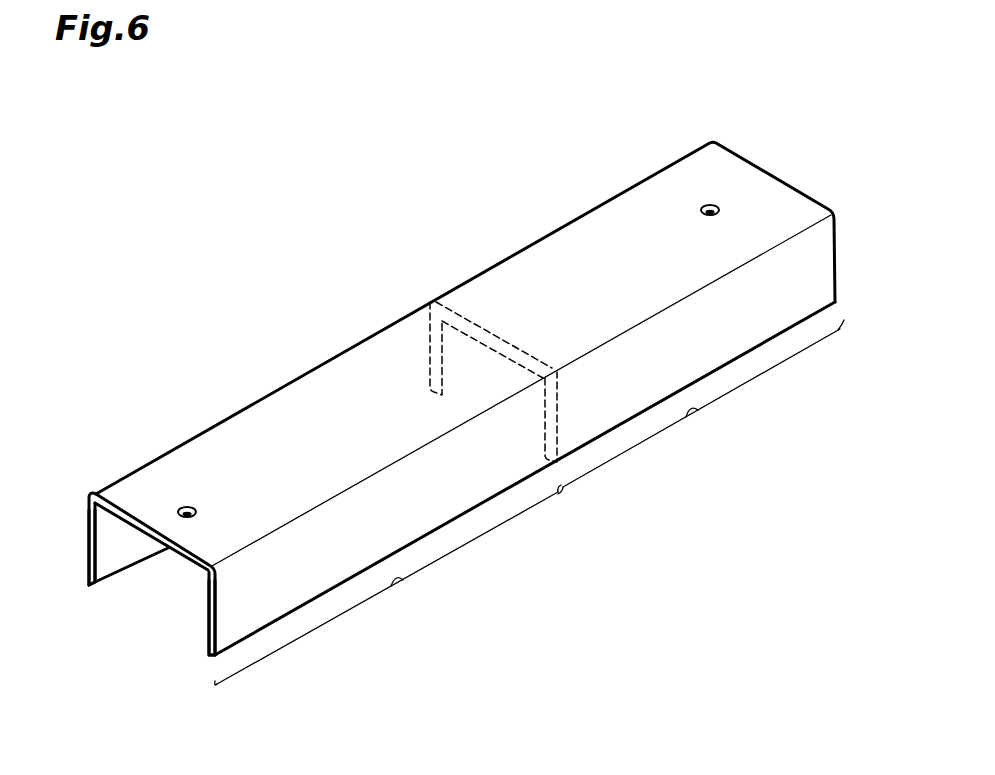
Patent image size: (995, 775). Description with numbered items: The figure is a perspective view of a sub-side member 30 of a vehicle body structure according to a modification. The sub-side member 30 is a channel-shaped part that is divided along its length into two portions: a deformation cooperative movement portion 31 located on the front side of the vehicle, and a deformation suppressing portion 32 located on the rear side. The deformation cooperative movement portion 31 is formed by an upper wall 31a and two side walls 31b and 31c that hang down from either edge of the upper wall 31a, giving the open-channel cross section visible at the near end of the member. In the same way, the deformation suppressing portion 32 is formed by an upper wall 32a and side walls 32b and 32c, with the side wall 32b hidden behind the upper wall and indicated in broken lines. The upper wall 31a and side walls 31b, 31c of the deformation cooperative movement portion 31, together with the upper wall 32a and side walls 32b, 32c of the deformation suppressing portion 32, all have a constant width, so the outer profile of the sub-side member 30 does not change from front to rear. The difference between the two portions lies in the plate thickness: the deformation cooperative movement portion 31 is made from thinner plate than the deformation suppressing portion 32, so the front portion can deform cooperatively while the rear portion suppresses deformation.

The sub-side member 30 is at (338, 183).
The deformation cooperative movement portion 31 is at (388, 585).
The upper wall 31a is at (242, 453).
The side wall 31b is at (108, 557).
The side wall 31c is at (228, 607).
The deformation suppressing portion 32 is at (701, 407).
The upper wall 32a is at (560, 266).
The side wall 32b is at (423, 341).
The side wall 32c is at (656, 342).